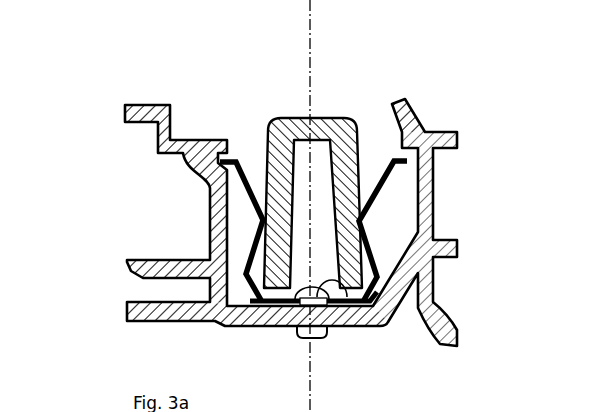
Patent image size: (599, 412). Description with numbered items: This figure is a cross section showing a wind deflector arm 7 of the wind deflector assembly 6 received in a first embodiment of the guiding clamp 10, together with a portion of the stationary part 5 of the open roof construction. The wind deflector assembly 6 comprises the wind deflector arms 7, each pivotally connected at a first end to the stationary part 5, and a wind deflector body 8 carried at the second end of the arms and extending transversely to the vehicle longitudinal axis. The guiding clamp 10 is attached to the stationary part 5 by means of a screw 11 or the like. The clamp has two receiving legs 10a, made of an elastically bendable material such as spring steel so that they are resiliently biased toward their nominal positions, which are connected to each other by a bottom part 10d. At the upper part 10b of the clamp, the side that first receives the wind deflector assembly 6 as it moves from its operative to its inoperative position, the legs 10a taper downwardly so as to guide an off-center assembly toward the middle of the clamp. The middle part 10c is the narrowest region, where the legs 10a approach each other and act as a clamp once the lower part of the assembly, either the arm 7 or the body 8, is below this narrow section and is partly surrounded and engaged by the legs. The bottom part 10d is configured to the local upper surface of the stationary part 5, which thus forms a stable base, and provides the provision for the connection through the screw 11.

The stationary part 5 is at (417, 110).
The wind deflector assembly 6 is at (347, 100).
The wind deflector arm 7 is at (242, 161).
The wind deflector body 8 is at (277, 123).
The guiding clamp 10 is at (433, 193).
The receiving leg 10a is at (262, 218).
The upper part 10b is at (262, 218).
The middle part 10c is at (128, 246).
The bottom part 10d is at (260, 326).
The screw 11 is at (360, 308).